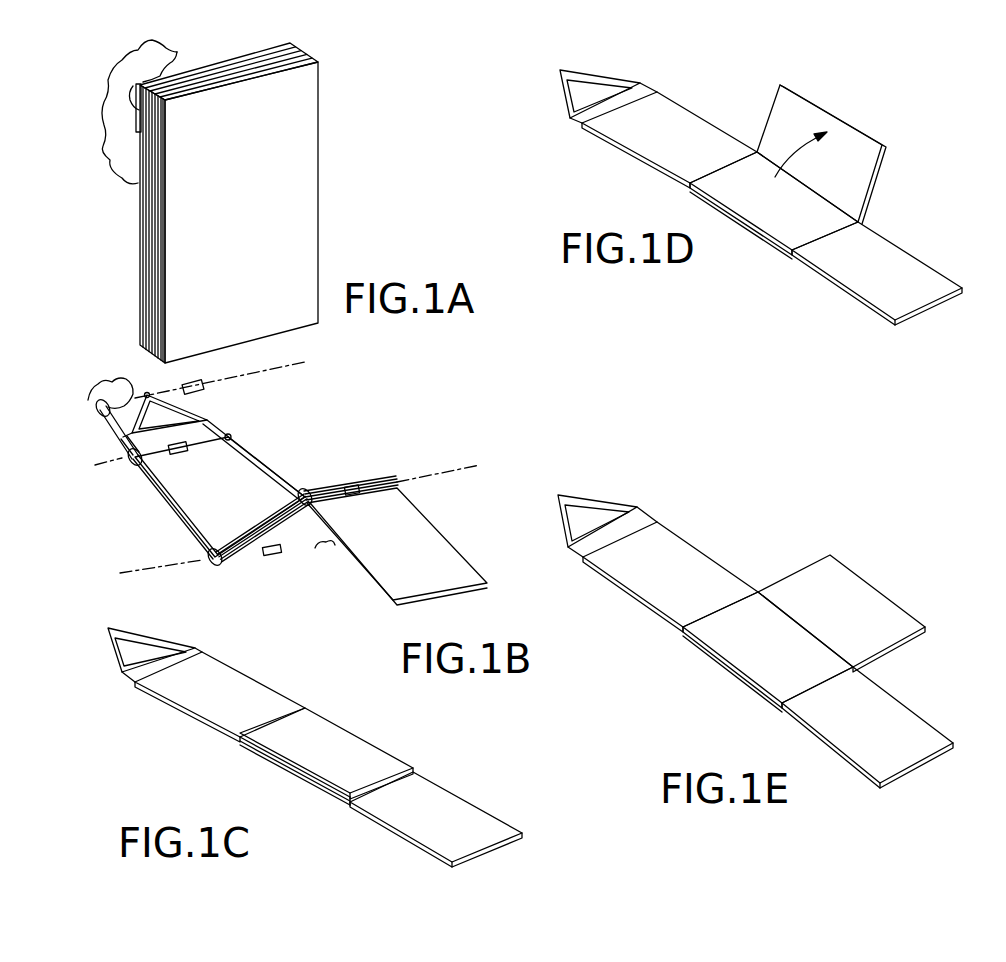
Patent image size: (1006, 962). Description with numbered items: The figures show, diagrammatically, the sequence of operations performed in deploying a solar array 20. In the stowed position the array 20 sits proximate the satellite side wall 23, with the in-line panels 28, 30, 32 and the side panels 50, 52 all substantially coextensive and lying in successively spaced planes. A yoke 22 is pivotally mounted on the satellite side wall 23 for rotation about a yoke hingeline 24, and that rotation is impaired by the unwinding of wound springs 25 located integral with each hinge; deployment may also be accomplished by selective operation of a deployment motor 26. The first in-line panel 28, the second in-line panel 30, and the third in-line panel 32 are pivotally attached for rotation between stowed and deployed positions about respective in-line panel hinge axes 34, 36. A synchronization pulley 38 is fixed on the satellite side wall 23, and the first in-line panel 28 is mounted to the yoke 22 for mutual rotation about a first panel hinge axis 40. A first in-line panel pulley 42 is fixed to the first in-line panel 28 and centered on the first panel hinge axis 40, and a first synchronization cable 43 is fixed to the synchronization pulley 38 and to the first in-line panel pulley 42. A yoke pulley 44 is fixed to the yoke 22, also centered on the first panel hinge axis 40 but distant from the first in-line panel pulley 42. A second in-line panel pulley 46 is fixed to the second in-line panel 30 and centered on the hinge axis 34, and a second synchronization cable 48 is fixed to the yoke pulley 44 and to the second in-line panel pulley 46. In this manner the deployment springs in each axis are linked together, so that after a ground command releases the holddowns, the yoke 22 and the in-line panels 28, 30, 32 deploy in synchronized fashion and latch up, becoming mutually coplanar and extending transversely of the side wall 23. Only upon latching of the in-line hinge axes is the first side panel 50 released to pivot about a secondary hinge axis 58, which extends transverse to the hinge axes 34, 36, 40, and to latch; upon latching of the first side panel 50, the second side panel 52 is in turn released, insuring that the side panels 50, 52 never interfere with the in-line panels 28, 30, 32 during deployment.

In FIG. 1A, the solar array 20 is at (259, 203).
In FIG. 1B, the solar array 20 is at (287, 469).
In FIG. 1C, the solar array 20 is at (311, 747).
In FIG. 1D, the solar array 20 is at (760, 217).
In FIG. 1E, the solar array 20 is at (761, 637).
In FIG. 1A, the yoke 22 is at (144, 96).
In FIG. 1B, the yoke 22 is at (193, 410).
In FIG. 1C, the yoke 22 is at (108, 650).
In FIG. 1D, the yoke 22 is at (565, 103).
In FIG. 1E, the yoke 22 is at (587, 497).
In FIG. 1A, the satellite side wall 23 is at (172, 54).
In FIG. 1B, the satellite side wall 23 is at (112, 385).
In FIG. 1B, the yoke hingeline 24 is at (304, 368).
In FIG. 1B, the wound springs 25 is at (190, 450).
In FIG. 1B, the deployment motor 26 is at (197, 375).
In FIG. 1B, the first in-line panel 28 is at (207, 522).
In FIG. 1C, the first in-line panel 28 is at (182, 692).
In FIG. 1D, the first in-line panel 28 is at (677, 115).
In FIG. 1E, the first in-line panel 28 is at (640, 587).
In FIG. 1B, the second in-line panel 30 is at (250, 560).
In FIG. 1C, the second in-line panel 30 is at (278, 770).
In FIG. 1D, the second in-line panel 30 is at (747, 236).
In FIG. 1E, the second in-line panel 30 is at (740, 683).
In FIG. 1A, the third in-line panel 32 is at (247, 217).
In FIG. 1B, the third in-line panel 32 is at (428, 537).
In FIG. 1C, the third in-line panel 32 is at (440, 802).
In FIG. 1D, the third in-line panel 32 is at (897, 257).
In FIG. 1E, the third in-line panel 32 is at (903, 755).
In FIG. 1B, the in-line panel hinge axis 34 is at (185, 567).
In FIG. 1B, the in-line panel hinge axis 36 is at (418, 473).
In FIG. 1B, the synchronization pulley 38 is at (112, 463).
In FIG. 1B, the first panel hinge axis 40 is at (137, 466).
In FIG. 1B, the first in-line panel pulley 42 is at (152, 460).
In FIG. 1B, the first synchronization cable 43 is at (126, 403).
In FIG. 1B, the yoke pulley 44 is at (232, 437).
In FIG. 1B, the second in-line panel pulley 46 is at (337, 533).
In FIG. 1B, the second synchronization cable 48 is at (271, 470).
In FIG. 1C, the first side panel 50 is at (342, 735).
In FIG. 1D, the first side panel 50 is at (858, 145).
In FIG. 1E, the first side panel 50 is at (862, 583).
In FIG. 1D, the second side panel 52 is at (690, 195).
In FIG. 1E, the second side panel 52 is at (732, 643).
In FIG. 1D, the secondary hinge axis 58 is at (1003, 305).